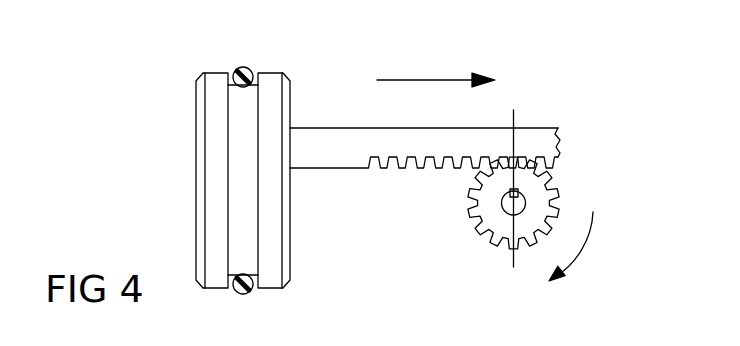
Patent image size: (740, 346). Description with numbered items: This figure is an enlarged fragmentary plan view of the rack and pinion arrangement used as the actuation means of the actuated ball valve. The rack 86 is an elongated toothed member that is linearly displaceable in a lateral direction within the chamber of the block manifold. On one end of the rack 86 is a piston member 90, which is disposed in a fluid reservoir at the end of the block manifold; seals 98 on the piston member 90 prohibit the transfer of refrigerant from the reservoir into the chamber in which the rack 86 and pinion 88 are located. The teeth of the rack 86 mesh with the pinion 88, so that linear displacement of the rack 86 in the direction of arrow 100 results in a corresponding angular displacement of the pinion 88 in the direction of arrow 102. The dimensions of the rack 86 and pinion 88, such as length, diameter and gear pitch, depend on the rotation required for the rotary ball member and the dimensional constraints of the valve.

The rack 86 is at (356, 127).
The pinion 88 is at (476, 217).
The piston member 90 is at (196, 137).
The seals 98 is at (236, 69).
The arrow 100 is at (456, 80).
The arrow 102 is at (586, 243).